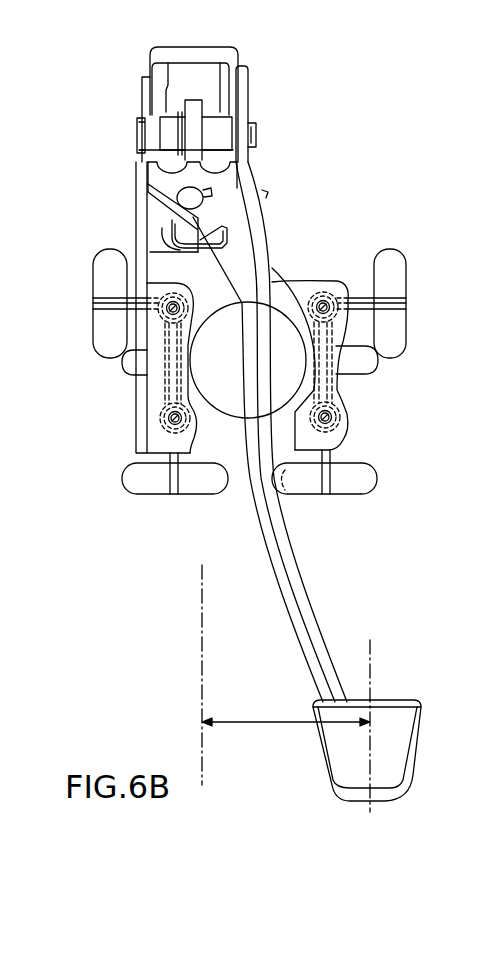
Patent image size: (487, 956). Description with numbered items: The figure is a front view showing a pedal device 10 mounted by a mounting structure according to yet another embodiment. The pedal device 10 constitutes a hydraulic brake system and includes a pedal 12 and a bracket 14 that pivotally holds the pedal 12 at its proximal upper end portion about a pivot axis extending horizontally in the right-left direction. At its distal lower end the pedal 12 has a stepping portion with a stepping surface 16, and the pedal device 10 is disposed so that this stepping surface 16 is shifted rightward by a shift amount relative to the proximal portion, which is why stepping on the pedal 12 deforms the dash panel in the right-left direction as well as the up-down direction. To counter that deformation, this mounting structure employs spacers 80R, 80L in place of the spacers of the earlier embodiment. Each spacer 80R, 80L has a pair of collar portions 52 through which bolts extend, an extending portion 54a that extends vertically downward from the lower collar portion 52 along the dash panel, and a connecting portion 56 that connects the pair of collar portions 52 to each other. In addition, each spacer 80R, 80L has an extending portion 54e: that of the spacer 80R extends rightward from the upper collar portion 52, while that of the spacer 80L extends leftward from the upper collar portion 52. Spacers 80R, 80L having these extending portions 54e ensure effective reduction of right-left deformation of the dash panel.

The pedal device 10 is at (365, 63).
The pedal 12 is at (298, 636).
The bracket 14 is at (261, 70).
The stepping surface 16 is at (406, 715).
The collar portions 52 is at (162, 312).
The extending portion 54a is at (168, 458).
The extending portion 54e is at (128, 297).
The connecting portion 56 is at (178, 381).
The spacer 80L is at (170, 543).
The spacer 80R is at (339, 539).